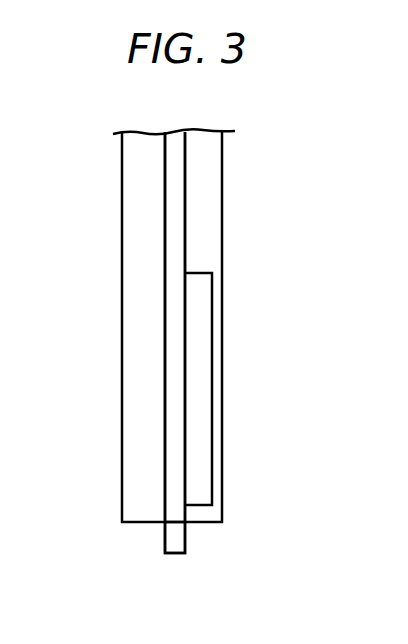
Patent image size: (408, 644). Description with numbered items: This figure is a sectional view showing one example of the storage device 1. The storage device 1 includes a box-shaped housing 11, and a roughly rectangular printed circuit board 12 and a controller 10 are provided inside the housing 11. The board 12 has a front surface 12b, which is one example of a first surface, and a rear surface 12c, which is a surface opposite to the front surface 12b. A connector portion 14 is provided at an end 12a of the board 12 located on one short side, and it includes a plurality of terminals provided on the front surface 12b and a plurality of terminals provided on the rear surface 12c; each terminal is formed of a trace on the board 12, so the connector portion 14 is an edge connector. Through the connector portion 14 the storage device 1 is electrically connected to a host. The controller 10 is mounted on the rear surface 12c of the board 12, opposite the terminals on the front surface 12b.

The storage device 1 is at (265, 175).
The controller 10 is at (212, 378).
The housing 11 is at (122, 178).
The printed circuit board 12 is at (178, 257).
The end of the board 12a is at (165, 523).
The front surface 12b is at (165, 232).
The rear surface 12c is at (222, 225).
The connector portion 14 is at (187, 540).